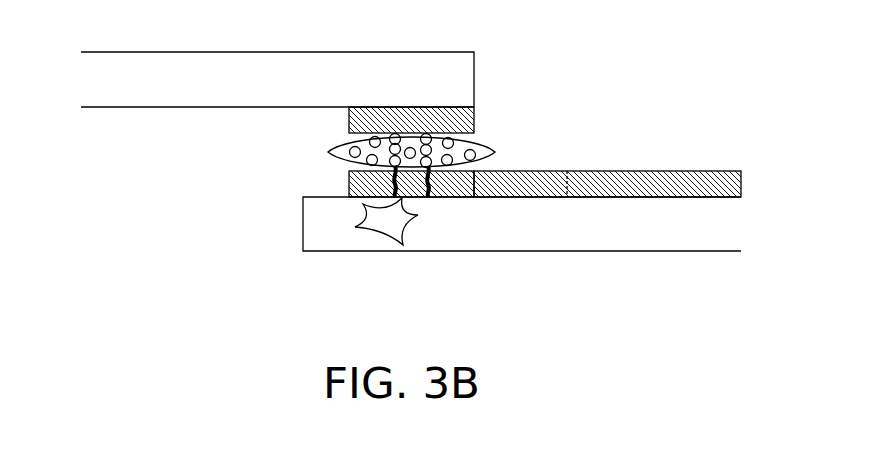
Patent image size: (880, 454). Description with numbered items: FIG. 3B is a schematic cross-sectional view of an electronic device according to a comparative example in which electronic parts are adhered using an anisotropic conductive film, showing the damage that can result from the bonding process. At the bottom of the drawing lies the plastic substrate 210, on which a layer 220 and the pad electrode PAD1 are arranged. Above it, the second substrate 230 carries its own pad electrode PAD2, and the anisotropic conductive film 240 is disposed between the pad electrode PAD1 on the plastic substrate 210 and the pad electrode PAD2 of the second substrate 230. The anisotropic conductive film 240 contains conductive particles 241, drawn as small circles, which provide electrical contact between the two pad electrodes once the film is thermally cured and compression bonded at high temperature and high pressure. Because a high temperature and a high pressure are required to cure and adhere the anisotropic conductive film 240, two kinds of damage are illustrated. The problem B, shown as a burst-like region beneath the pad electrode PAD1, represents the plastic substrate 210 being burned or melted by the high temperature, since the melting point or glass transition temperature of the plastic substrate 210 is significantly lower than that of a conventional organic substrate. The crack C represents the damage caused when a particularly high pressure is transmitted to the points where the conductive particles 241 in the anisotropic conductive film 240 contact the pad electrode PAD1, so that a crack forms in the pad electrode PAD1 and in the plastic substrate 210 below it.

The second substrate 230 is at (97, 81).
The pad electrode PAD2 is at (455, 121).
The anisotropic conductive film 240 is at (411, 166).
The conductive particles 241 is at (350, 152).
The pad electrode PAD1 is at (365, 183).
The wiring layer 220 is at (722, 185).
The plastic substrate 210 is at (720, 222).
The problem B is at (347, 248).
The crack C is at (455, 202).